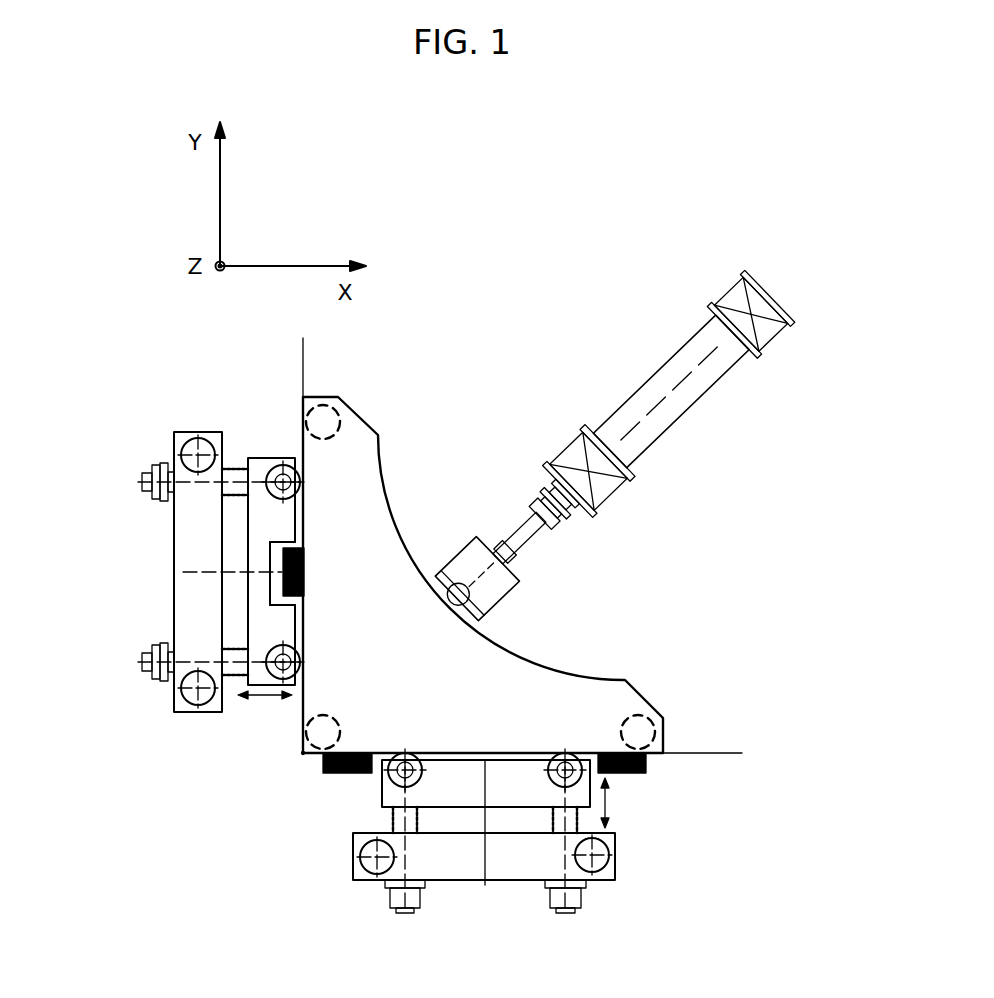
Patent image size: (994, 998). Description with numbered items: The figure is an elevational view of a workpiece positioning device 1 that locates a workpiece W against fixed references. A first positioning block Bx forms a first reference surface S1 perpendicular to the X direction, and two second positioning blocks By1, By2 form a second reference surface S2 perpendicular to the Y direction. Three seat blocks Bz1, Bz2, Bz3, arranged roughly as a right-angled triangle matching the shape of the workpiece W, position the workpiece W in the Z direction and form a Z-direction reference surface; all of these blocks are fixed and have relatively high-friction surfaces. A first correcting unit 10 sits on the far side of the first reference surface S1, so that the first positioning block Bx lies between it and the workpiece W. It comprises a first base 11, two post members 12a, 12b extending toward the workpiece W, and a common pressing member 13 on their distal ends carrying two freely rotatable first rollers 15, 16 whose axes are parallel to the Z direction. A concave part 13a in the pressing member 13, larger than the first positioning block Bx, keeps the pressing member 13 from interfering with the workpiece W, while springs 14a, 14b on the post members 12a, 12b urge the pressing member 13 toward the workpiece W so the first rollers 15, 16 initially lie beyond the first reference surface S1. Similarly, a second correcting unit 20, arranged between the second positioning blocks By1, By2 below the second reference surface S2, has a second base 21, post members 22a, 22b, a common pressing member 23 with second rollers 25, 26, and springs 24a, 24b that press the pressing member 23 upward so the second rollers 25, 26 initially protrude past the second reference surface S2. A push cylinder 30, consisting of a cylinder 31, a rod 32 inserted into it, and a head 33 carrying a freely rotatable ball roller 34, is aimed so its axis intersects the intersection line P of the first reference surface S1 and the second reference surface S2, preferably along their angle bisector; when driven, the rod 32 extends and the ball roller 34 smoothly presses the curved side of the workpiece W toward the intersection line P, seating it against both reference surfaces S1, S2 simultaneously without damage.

The workpiece positioning device 1 is at (823, 352).
The first correcting unit 10 is at (116, 392).
The first base 11 is at (193, 533).
The post member 12a is at (237, 477).
The post member 12b is at (228, 680).
The pressing member 13 is at (253, 555).
The concave part 13a is at (273, 592).
The spring 14a is at (237, 497).
The spring 14b is at (237, 647).
The first roller 15 is at (275, 468).
The first roller 16 is at (301, 655).
The second correcting unit 20 is at (301, 887).
The second base 21 is at (465, 857).
The post member 22a is at (427, 830).
The post member 22b is at (550, 828).
The pressing member 23 is at (503, 792).
The spring 24a is at (390, 820).
The spring 24b is at (585, 815).
The second roller 25 is at (395, 783).
The second roller 26 is at (580, 758).
The push cylinder 30 is at (626, 334).
The cylinder 31 is at (683, 400).
The rod 32 is at (508, 540).
The head 33 is at (470, 555).
The ball roller 34 is at (466, 595).
The workpiece W is at (350, 482).
The first reference surface S1 is at (303, 342).
The second reference surface S2 is at (698, 752).
The intersection line P is at (303, 753).
The first positioning block Bx is at (282, 578).
The second positioning block By1 is at (330, 765).
The second positioning block By2 is at (646, 763).
The seat block Bz1 is at (327, 417).
The seat block Bz2 is at (335, 715).
The seat block Bz3 is at (641, 720).